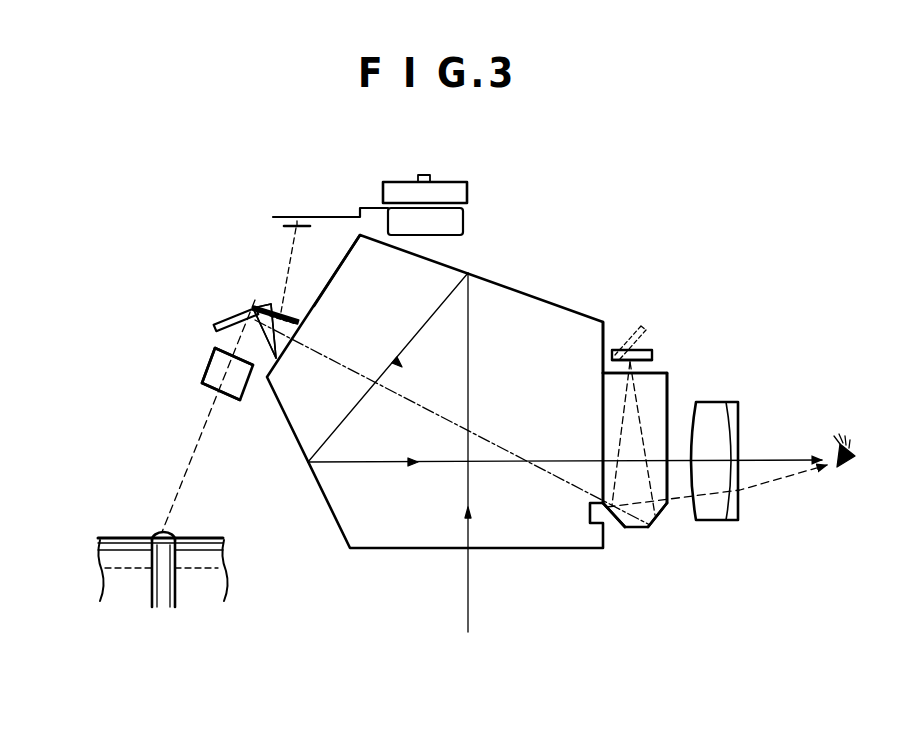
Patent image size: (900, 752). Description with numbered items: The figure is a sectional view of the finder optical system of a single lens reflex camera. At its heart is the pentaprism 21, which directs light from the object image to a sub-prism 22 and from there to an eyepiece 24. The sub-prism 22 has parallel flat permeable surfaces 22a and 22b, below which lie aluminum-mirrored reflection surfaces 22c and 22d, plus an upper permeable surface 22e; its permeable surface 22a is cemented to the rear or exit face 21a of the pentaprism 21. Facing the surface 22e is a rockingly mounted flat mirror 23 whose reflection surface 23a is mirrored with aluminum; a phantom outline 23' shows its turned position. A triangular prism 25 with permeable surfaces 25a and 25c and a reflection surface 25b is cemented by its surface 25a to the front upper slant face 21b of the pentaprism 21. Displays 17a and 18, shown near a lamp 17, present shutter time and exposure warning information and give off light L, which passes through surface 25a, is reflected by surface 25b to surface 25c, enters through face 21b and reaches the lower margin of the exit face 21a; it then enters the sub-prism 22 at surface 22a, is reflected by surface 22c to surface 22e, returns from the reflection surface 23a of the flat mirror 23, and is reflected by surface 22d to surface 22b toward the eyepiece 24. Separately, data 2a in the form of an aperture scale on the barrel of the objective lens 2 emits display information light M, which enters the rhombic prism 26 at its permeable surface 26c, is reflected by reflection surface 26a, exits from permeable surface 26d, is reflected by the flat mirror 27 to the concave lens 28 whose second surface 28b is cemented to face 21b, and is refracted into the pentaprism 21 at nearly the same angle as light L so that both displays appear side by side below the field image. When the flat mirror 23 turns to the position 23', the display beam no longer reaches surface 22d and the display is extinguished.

The objective lens 2 is at (222, 582).
The aperture scale 2a is at (160, 532).
The lamp 17 is at (448, 182).
The display 17a is at (315, 216).
The display 18 is at (290, 225).
The pentaprism 21 is at (557, 312).
The exit face 21a is at (606, 322).
The front upper slant face 21b is at (345, 266).
The sub-prism 22 is at (670, 376).
The permeable surface 22a is at (603, 432).
The permeable surface 22b is at (669, 405).
The reflection surface 22c is at (660, 528).
The reflection surface 22d is at (627, 530).
The upper permeable surface 22e is at (658, 372).
The flat mirror 23 is at (632, 326).
The phantom outline 23' is at (647, 317).
The reflection surface 23a is at (655, 358).
The eyepiece 24 is at (730, 402).
The triangular prism 25 is at (258, 305).
The permeable surface 25a is at (275, 302).
The reflection surface 25b is at (255, 308).
The permeable surface 25c is at (286, 338).
The rhombic prism 26 is at (204, 377).
The reflection surface 26a is at (212, 385).
The permeable surface 26c is at (236, 400).
The permeable surface 26d is at (218, 347).
The flat mirror 27 is at (218, 325).
The concave lens 28 is at (296, 318).
The second surface 28b is at (300, 330).
The light L is at (278, 250).
The display information light M is at (182, 483).